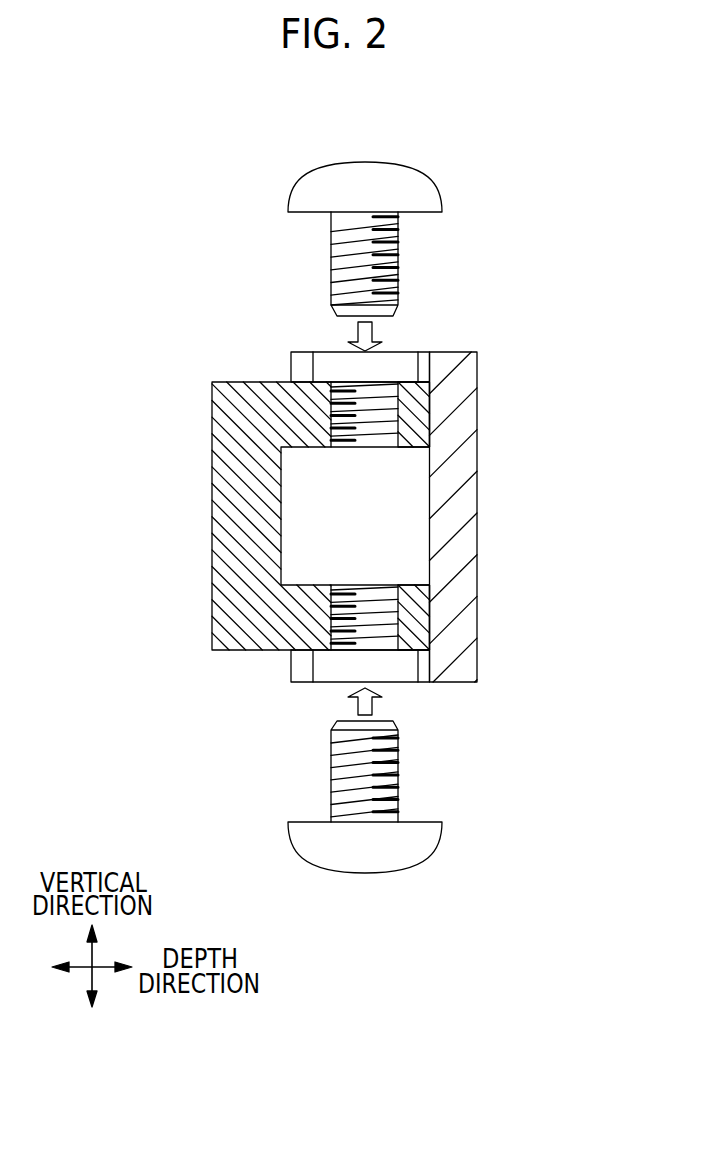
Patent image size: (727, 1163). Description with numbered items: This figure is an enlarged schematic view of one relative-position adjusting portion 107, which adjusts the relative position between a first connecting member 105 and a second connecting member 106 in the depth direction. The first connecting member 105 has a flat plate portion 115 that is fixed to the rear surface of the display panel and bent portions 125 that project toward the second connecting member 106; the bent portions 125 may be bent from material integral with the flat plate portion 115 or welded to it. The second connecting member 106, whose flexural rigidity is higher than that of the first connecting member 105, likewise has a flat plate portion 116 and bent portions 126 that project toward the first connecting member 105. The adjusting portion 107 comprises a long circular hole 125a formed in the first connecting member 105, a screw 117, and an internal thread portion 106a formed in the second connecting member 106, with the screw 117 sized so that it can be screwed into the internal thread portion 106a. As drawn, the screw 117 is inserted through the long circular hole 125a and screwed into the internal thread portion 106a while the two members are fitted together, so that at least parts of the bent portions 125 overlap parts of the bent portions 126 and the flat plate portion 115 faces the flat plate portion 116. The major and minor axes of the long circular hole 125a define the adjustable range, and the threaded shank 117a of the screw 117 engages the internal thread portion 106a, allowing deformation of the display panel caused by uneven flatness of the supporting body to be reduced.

The first connecting member 105 is at (514, 517).
The second connecting member 106 is at (211, 485).
The internal thread portion 106a is at (397, 402).
The relative-position adjusting portion 107 is at (452, 490).
The flat plate portion 115 is at (447, 468).
The flat plate portion 116 is at (250, 538).
The screw 117 is at (405, 178).
The screw shank 117a is at (398, 229).
The bent portion 125 is at (298, 364).
The long circular hole 125a is at (418, 365).
The bent portion 126 is at (412, 411).